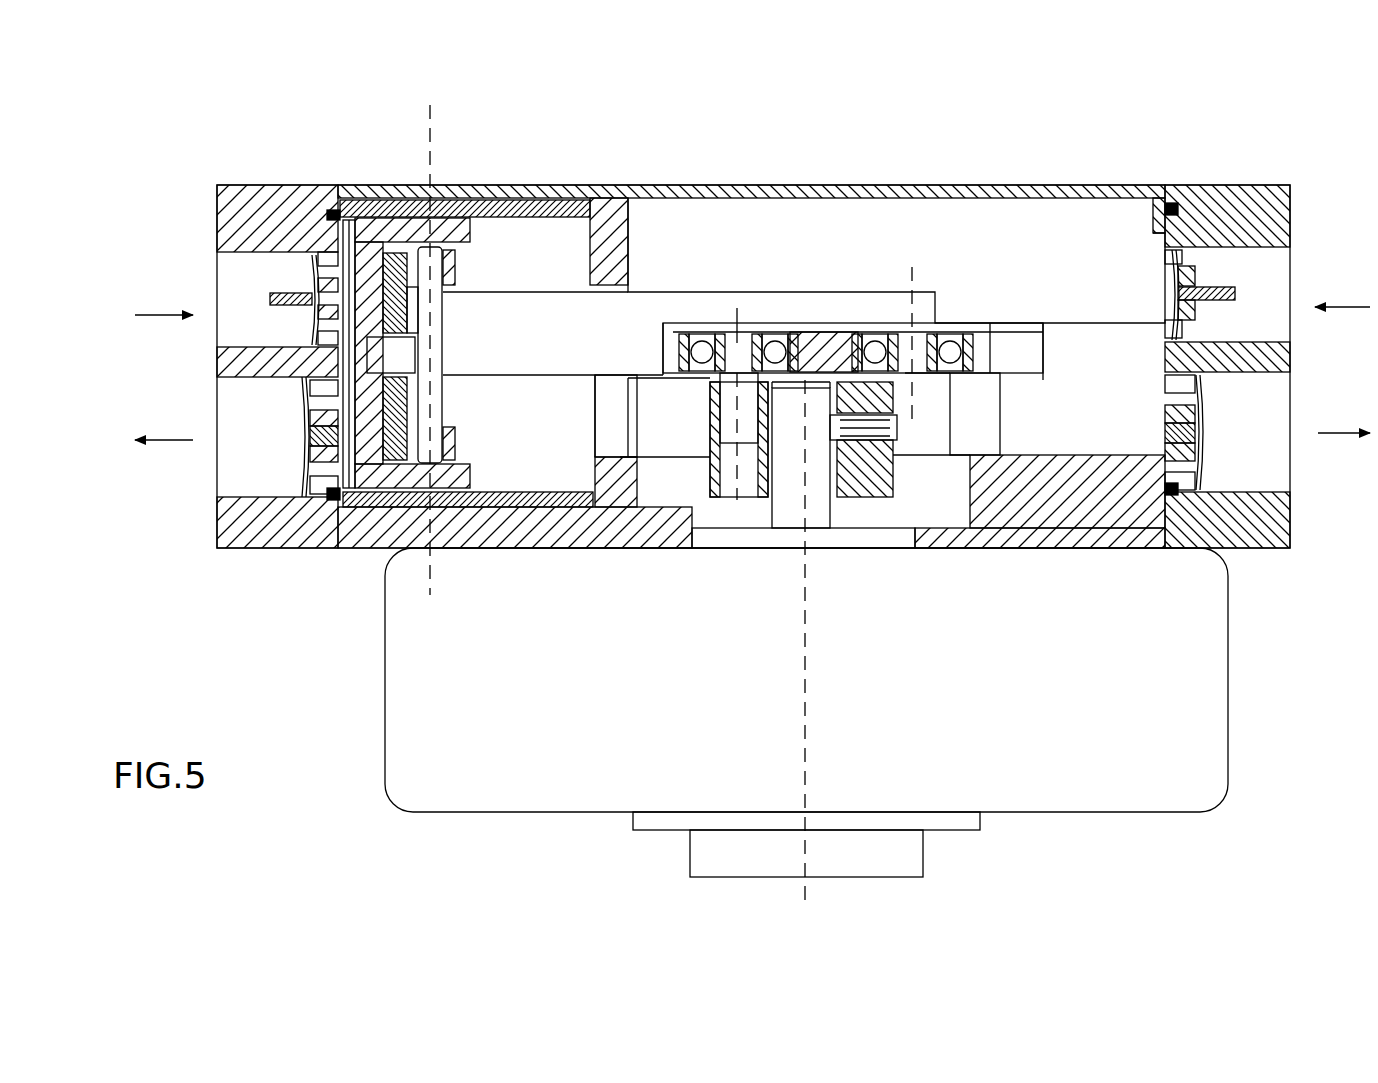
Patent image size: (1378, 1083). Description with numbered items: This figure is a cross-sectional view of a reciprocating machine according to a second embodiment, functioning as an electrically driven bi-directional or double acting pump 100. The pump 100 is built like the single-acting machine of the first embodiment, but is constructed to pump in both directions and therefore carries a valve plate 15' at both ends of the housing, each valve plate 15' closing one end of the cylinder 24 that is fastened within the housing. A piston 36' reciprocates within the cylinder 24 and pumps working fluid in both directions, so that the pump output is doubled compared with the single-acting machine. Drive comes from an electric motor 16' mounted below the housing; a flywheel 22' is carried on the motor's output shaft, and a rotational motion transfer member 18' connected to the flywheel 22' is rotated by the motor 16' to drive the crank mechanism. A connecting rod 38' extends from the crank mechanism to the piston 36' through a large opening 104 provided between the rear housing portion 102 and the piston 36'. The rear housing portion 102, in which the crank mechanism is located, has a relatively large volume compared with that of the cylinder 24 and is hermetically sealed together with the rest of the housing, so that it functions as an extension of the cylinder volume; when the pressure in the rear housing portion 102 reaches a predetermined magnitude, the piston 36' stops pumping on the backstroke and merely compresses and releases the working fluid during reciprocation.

The electrically driven bi-directional pump 100 is at (697, 155).
The rear housing portion 102 is at (883, 238).
The large opening 104 is at (612, 428).
The valve plate 15' is at (754, 400).
The electric motor 16' is at (806, 712).
The rotational motion transfer member 18' is at (739, 477).
The flywheel 22' is at (901, 514).
The cylinder 24 is at (475, 185).
The piston 36' is at (373, 310).
The connecting rod 38' is at (743, 253).